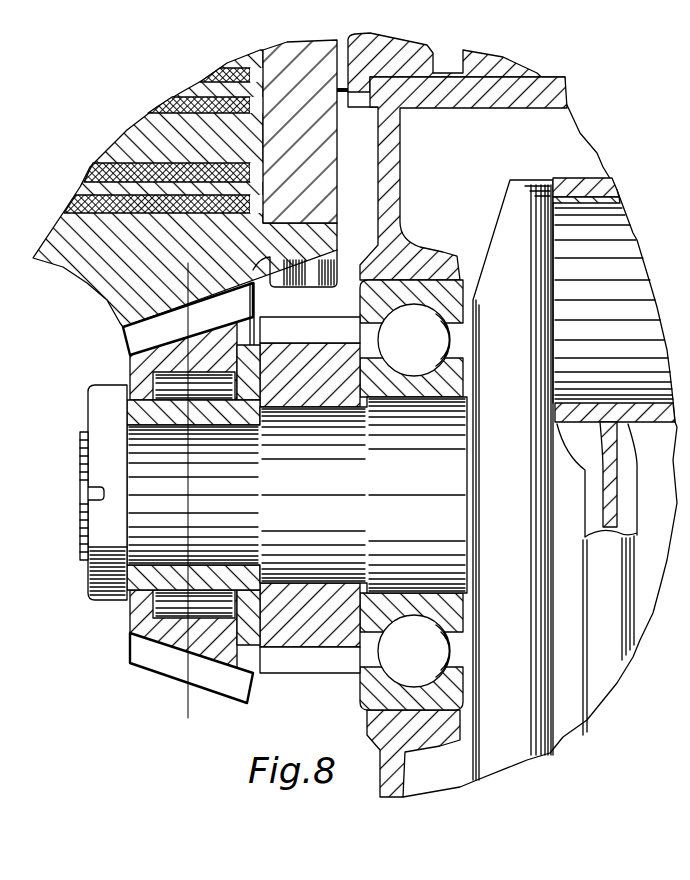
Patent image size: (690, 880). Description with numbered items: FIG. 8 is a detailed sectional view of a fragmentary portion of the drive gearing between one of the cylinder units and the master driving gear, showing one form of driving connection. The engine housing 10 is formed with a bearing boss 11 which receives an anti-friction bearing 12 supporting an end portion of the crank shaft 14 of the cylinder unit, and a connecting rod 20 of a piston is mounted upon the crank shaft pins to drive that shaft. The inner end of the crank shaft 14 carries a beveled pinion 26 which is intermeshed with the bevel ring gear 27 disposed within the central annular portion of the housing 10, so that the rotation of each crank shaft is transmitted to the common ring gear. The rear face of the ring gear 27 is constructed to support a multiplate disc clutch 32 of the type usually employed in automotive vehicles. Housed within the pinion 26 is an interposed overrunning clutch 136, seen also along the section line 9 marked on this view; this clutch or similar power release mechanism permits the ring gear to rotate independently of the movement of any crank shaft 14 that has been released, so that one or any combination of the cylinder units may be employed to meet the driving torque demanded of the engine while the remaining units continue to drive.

The section line 9- 9 is at (180, 275).
The housing 10 is at (404, 128).
The bearing boss 11 is at (443, 247).
The anti-friction bearing 12 is at (397, 663).
The crank shaft 14 is at (137, 523).
The connecting rod 20 is at (607, 667).
The beveled pinion 26 is at (140, 637).
The bevel ring gear 27 is at (128, 296).
The multiplate disc clutch 32 is at (108, 162).
The overrunning clutch 136 is at (160, 602).